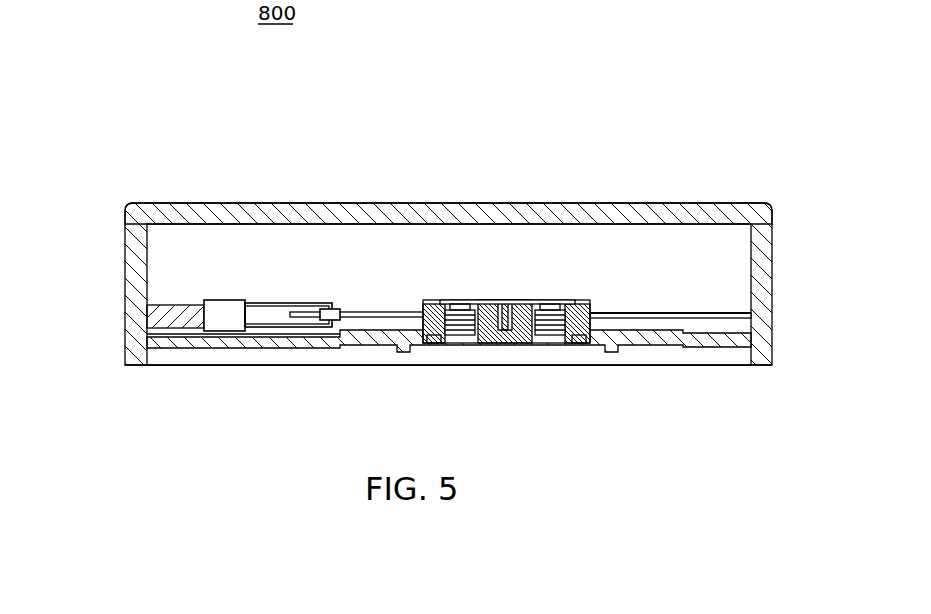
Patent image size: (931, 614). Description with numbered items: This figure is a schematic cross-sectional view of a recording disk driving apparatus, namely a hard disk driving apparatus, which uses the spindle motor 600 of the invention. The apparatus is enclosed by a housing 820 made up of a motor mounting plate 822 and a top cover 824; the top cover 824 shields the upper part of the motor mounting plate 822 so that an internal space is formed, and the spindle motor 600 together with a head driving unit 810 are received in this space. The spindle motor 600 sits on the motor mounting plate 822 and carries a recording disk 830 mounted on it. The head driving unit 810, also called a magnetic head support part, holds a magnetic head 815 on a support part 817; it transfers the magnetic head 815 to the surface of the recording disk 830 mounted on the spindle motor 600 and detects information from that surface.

The housing 820 is at (120, 243).
The top cover 824 is at (290, 214).
The motor mounting plate 822 is at (762, 356).
The head driving unit 810 is at (220, 336).
The support part 817 is at (283, 328).
The magnetic head 815 is at (337, 321).
The recording disk 830 is at (643, 318).
The spindle motor 600 is at (509, 284).